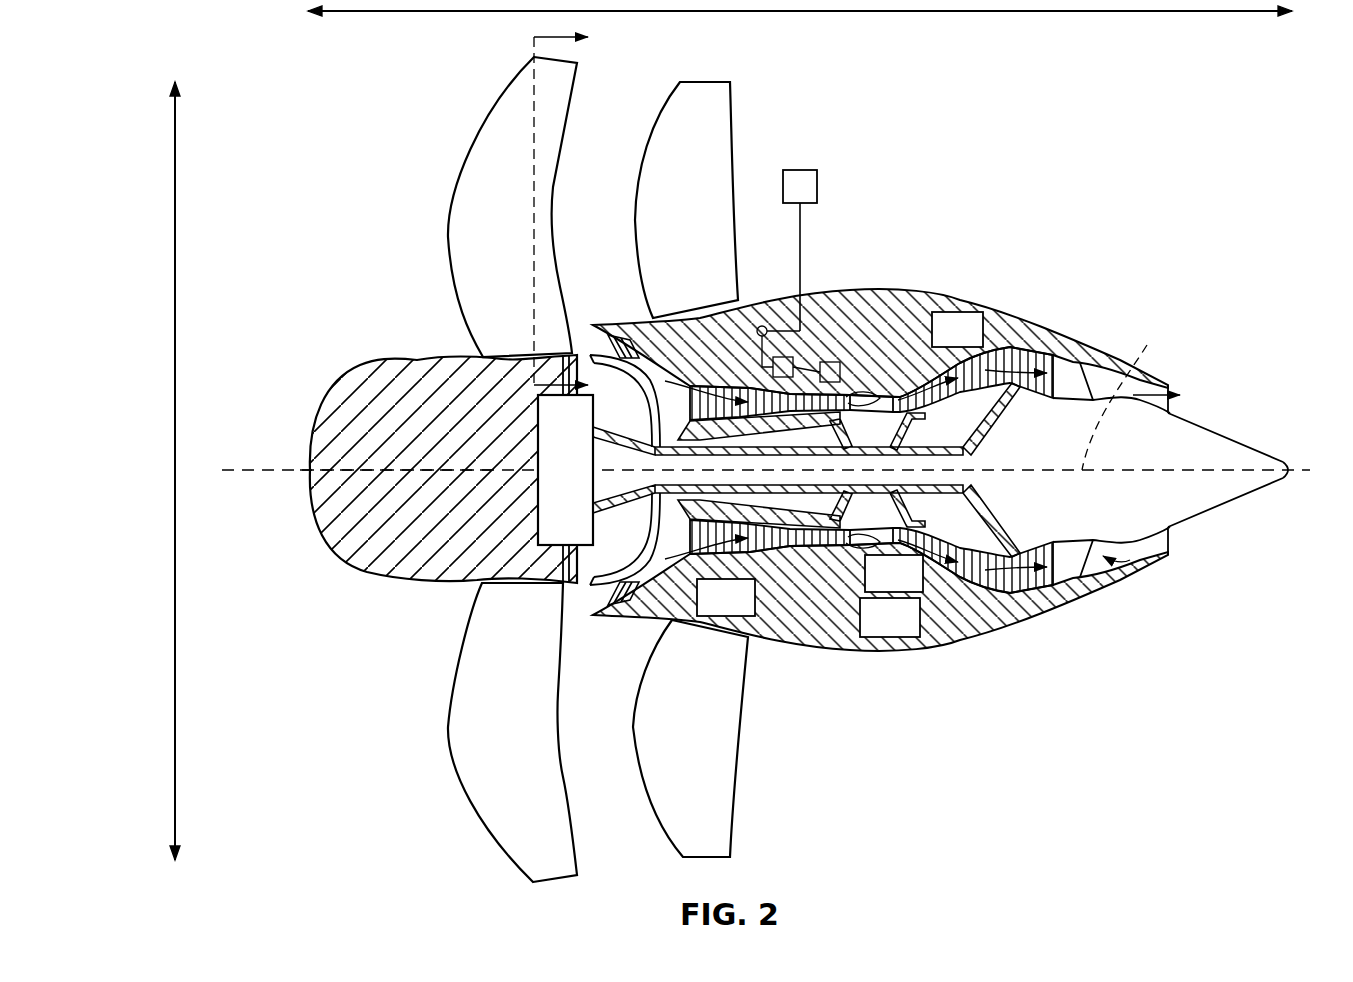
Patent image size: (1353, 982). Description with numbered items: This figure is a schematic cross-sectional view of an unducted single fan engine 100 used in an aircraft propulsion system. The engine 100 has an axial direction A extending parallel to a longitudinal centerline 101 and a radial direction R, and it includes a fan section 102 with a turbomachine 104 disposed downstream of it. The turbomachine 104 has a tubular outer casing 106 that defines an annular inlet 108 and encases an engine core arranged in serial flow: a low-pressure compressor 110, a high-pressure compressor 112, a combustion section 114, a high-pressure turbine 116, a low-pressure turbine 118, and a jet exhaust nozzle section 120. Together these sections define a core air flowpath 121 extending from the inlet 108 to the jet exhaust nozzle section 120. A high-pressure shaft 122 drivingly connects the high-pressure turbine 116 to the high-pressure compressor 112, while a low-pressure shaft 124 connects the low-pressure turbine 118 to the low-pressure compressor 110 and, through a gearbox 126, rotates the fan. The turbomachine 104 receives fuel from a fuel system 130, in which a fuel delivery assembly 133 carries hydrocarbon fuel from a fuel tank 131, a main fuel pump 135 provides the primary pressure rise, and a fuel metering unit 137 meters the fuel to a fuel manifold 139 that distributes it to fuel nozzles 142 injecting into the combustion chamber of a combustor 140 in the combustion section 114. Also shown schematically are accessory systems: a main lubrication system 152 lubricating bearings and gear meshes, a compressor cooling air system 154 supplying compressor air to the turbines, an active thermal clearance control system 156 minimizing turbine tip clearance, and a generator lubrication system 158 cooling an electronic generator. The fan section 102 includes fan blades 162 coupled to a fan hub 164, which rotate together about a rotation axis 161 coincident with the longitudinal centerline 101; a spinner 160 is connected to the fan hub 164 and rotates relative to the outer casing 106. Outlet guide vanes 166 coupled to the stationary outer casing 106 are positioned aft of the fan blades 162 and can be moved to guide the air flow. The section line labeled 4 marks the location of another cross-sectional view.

The unducted single fan engine 100 is at (312, 64).
The longitudinal centerline 101 is at (1129, 392).
The fan section 102 is at (481, 206).
The turbomachine 104 is at (1092, 278).
The tubular outer casing 106 is at (820, 464).
The inlet 108 is at (597, 337).
The low-pressure compressor 110 is at (626, 609).
The high-pressure compressor 112 is at (697, 557).
The combustion section 114 is at (830, 560).
The high-pressure turbine 116 is at (935, 543).
The low-pressure turbine 118 is at (984, 608).
The jet exhaust nozzle section 120 is at (1188, 403).
The core air flowpath 121 is at (655, 568).
The high-pressure shaft 122 is at (897, 447).
The low-pressure shaft 124 is at (980, 432).
The gearbox 126 is at (535, 583).
The fuel system 130 is at (781, 246).
The fuel tank 131 is at (818, 188).
The fuel delivery assembly 133 is at (800, 240).
The main fuel pump 135 is at (760, 326).
The fuel metering unit 137 is at (768, 352).
The fuel manifold 139 is at (830, 360).
The combustor 140 is at (877, 400).
The fuel nozzles 142 is at (858, 398).
The main lubrication system 152 is at (940, 342).
The compressor cooling air system 154 is at (708, 611).
The active thermal clearance control system 156 is at (876, 587).
The generator lubrication system 158 is at (872, 631).
The spinner 160 is at (313, 440).
The rotation axis 161 is at (272, 484).
The fan blades 162 is at (500, 155).
The fan hub 164 is at (585, 345).
The outlet guide vanes 166 is at (720, 108).
The radial direction R is at (175, 470).
The axial direction A is at (962, 13).
The section line 4- 4 is at (572, 211).